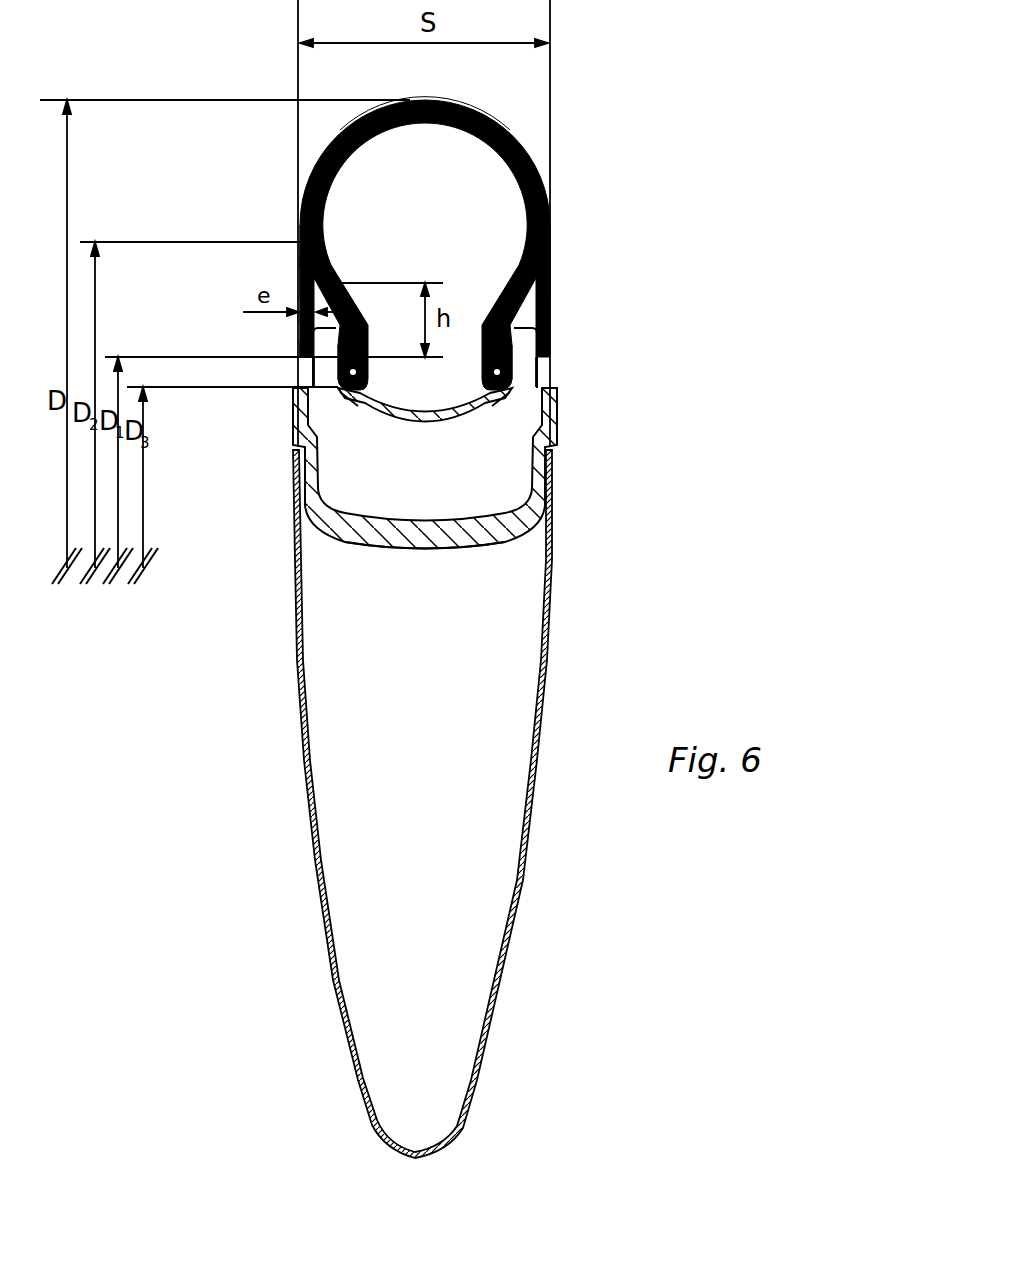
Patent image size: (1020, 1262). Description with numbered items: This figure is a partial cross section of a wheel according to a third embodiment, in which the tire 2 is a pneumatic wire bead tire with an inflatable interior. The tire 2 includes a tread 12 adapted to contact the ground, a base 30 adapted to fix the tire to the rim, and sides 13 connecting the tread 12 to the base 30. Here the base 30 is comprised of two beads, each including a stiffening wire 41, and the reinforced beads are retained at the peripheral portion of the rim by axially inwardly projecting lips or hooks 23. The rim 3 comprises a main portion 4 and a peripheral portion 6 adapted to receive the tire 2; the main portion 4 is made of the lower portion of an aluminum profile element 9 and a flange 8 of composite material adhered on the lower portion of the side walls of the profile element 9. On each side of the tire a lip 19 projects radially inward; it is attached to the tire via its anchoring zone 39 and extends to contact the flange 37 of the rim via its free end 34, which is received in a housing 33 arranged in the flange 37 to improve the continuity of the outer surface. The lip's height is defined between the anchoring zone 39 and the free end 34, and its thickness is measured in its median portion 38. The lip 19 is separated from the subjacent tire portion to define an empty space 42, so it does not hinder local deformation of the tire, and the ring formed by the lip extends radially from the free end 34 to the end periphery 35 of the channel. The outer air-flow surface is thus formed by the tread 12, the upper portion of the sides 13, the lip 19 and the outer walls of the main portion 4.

The tire 2 is at (657, 163).
The rim 3 is at (695, 367).
The main portion 4 is at (637, 407).
The peripheral portion 6 is at (556, 392).
The flange 8 is at (547, 502).
The profile element 9 is at (548, 437).
The tread 12 is at (540, 124).
The sides 13 is at (538, 244).
The lip 19 is at (178, 248).
The hooks 23 is at (538, 325).
The base 30 is at (547, 288).
The housing 33 is at (300, 366).
The free end 34 is at (300, 346).
The end periphery 35 is at (300, 262).
The flange 37 is at (302, 362).
The median portion 38 is at (298, 318).
The anchoring zone 39 is at (298, 258).
The stiffening wire 41 is at (538, 350).
The empty space 42 is at (562, 305).